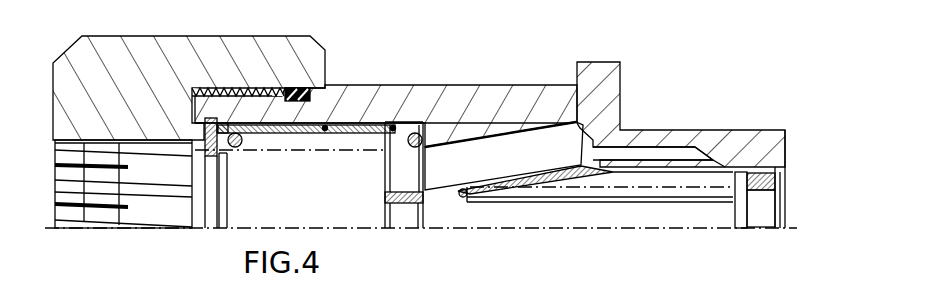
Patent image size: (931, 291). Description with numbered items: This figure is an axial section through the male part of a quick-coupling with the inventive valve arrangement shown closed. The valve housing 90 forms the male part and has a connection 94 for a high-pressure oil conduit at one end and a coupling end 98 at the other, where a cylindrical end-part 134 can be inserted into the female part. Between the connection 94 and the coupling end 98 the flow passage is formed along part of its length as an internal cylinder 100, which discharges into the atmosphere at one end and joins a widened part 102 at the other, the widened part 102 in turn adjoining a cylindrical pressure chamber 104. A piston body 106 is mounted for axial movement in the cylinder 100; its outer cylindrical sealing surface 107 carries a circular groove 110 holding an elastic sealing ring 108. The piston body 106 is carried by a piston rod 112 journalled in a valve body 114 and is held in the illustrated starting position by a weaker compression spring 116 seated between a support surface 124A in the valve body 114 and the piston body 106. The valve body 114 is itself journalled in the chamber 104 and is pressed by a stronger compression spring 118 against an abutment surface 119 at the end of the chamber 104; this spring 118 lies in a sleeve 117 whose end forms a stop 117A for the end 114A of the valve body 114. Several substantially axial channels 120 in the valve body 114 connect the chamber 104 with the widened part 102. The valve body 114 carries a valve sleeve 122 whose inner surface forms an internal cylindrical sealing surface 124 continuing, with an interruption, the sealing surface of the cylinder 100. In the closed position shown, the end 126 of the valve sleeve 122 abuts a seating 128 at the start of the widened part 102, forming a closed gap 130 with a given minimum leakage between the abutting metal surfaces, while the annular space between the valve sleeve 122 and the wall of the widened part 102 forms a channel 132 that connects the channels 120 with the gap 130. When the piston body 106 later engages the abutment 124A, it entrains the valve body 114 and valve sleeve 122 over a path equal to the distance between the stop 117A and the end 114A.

The valve housing 90 is at (218, 43).
The connection 94 is at (166, 222).
The coupling end 98 is at (787, 148).
The cylinder 100 is at (758, 170).
The widened part 102 is at (582, 155).
The pressure chamber 104 is at (310, 214).
The piston body 106 is at (790, 215).
The sealing surface 107 is at (740, 221).
The sealing ring 108 is at (787, 178).
The groove 110 is at (767, 218).
The piston rod 112 is at (497, 218).
The valve body 114 is at (500, 183).
The end of the valve body 114A is at (415, 122).
The weaker compression spring 116 is at (472, 188).
The sleeve 117 is at (345, 125).
The stop 117A is at (394, 127).
The stronger compression spring 118 is at (282, 143).
The abutment surface 119 is at (577, 127).
The axial channels 120 is at (503, 123).
The valve sleeve 122 is at (585, 185).
The internal cylindrical sealing surface 124 is at (670, 178).
The support surface 124A is at (627, 180).
The end of the valve sleeve 126 is at (720, 183).
The seating 128 is at (728, 165).
The closed gap 130 is at (714, 160).
The channel 132 is at (620, 150).
The cylindrical end-part 134 is at (781, 137).